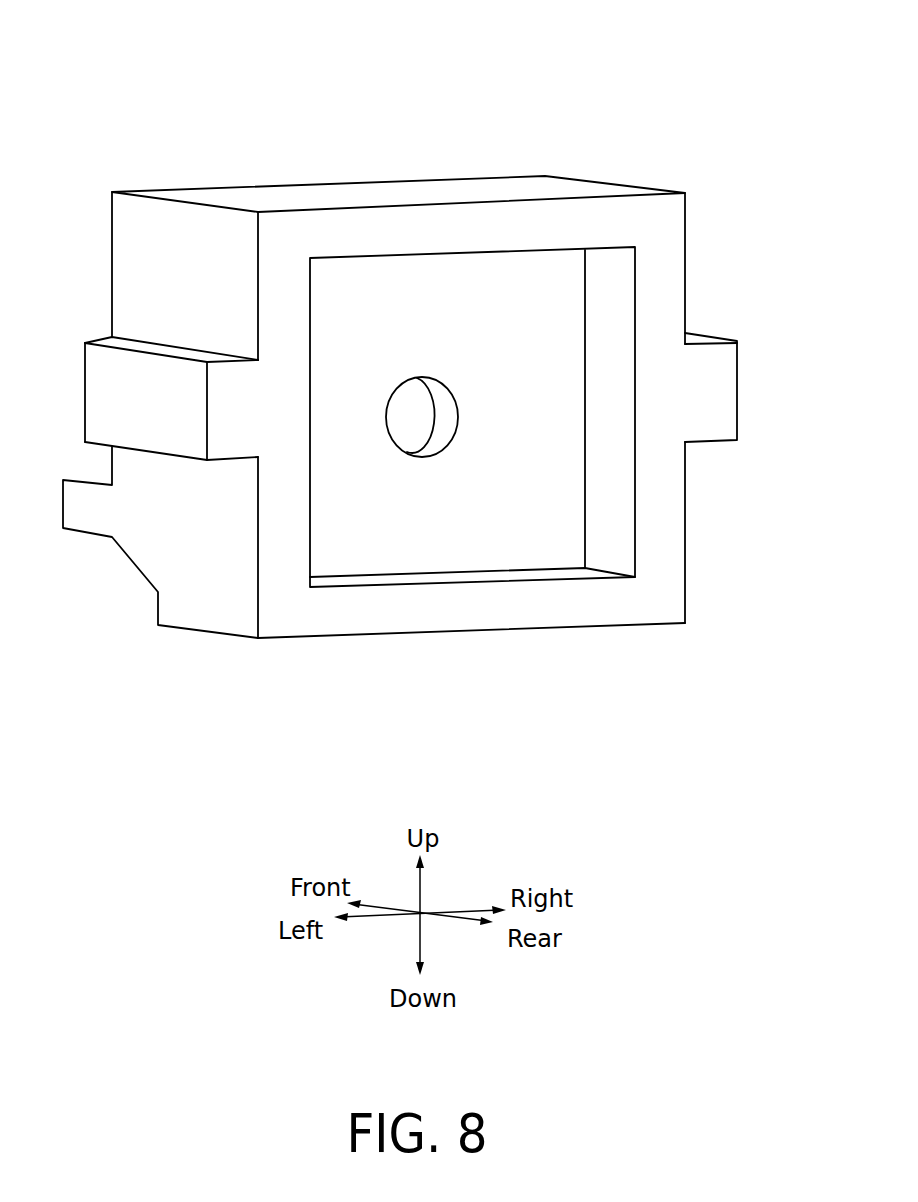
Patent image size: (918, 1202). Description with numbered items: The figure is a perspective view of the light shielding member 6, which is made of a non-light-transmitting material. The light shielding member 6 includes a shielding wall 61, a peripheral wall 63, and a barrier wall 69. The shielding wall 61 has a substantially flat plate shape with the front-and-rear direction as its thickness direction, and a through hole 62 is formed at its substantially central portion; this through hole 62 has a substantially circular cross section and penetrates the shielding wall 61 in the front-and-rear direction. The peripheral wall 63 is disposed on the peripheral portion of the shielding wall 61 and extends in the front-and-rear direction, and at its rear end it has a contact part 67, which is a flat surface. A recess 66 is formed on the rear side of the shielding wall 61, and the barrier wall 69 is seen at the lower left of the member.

The light shielding member 6 is at (409, 371).
The shielding wall 61 is at (470, 545).
The through hole 62 is at (433, 440).
The peripheral wall 63 is at (558, 188).
The recess 66 is at (610, 296).
The contact part 67 is at (450, 232).
The barrier wall 69 is at (85, 533).